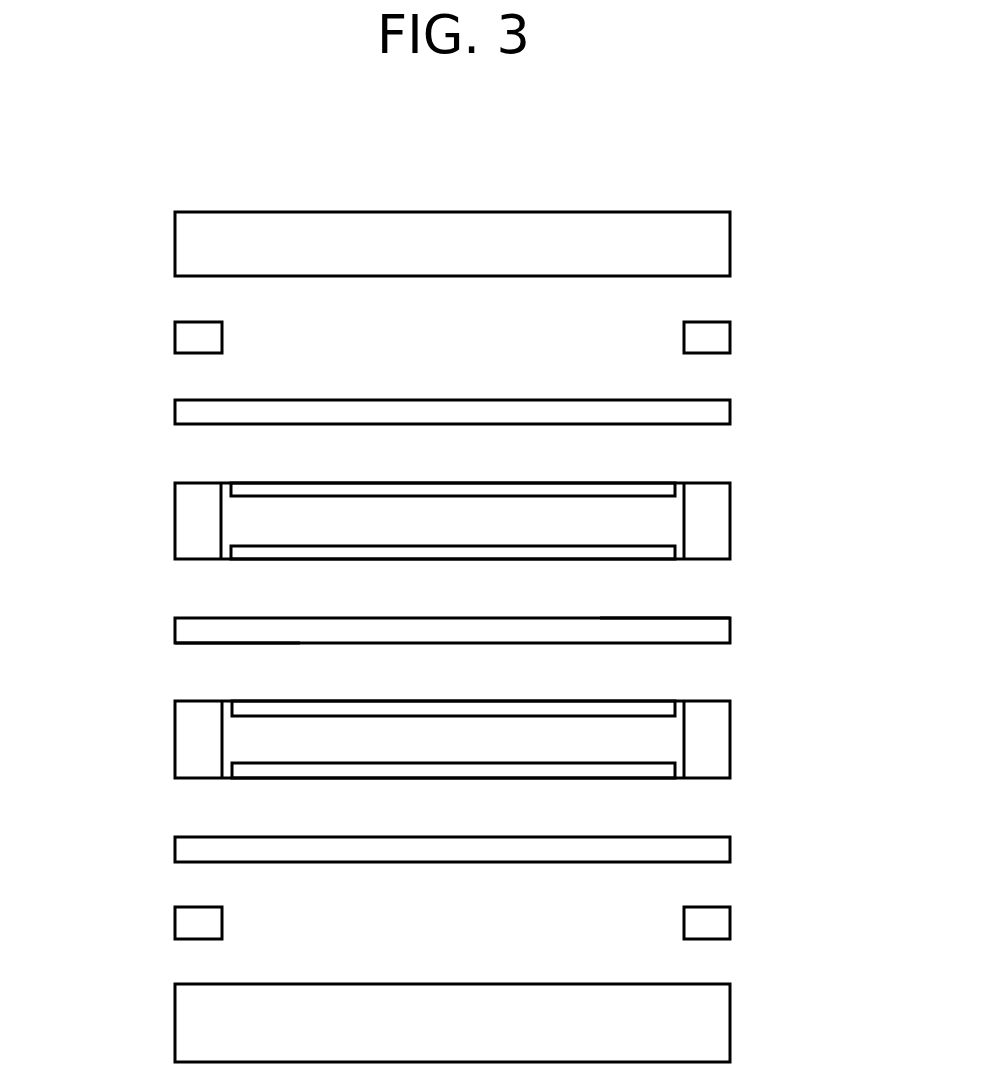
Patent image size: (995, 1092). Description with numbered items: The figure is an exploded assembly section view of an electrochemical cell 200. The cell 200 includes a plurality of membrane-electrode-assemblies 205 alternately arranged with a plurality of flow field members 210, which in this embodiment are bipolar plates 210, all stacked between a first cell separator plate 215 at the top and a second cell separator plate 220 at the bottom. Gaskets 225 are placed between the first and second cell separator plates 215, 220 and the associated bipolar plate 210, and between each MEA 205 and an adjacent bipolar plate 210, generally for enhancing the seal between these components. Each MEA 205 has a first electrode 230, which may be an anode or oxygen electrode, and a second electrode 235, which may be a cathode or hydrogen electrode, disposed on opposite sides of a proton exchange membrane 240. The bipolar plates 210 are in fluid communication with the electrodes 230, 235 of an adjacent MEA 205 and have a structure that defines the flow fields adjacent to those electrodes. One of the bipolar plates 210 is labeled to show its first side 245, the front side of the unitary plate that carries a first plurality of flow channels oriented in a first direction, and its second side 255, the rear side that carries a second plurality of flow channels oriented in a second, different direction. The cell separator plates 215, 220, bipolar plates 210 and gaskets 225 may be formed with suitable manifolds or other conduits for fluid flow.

The cell 200 is at (71, 268).
The membrane-electrode-assembly 205 is at (484, 613).
The flow field member 210 is at (730, 411).
The first cell separator plate 215 is at (730, 243).
The second cell separator plate 220 is at (730, 1023).
The gasket 225 is at (730, 338).
The first electrode 230 is at (336, 560).
The second electrode 235 is at (336, 482).
The proton exchange membrane 240 is at (250, 740).
The first side 245 is at (682, 618).
The second side 255 is at (197, 643).